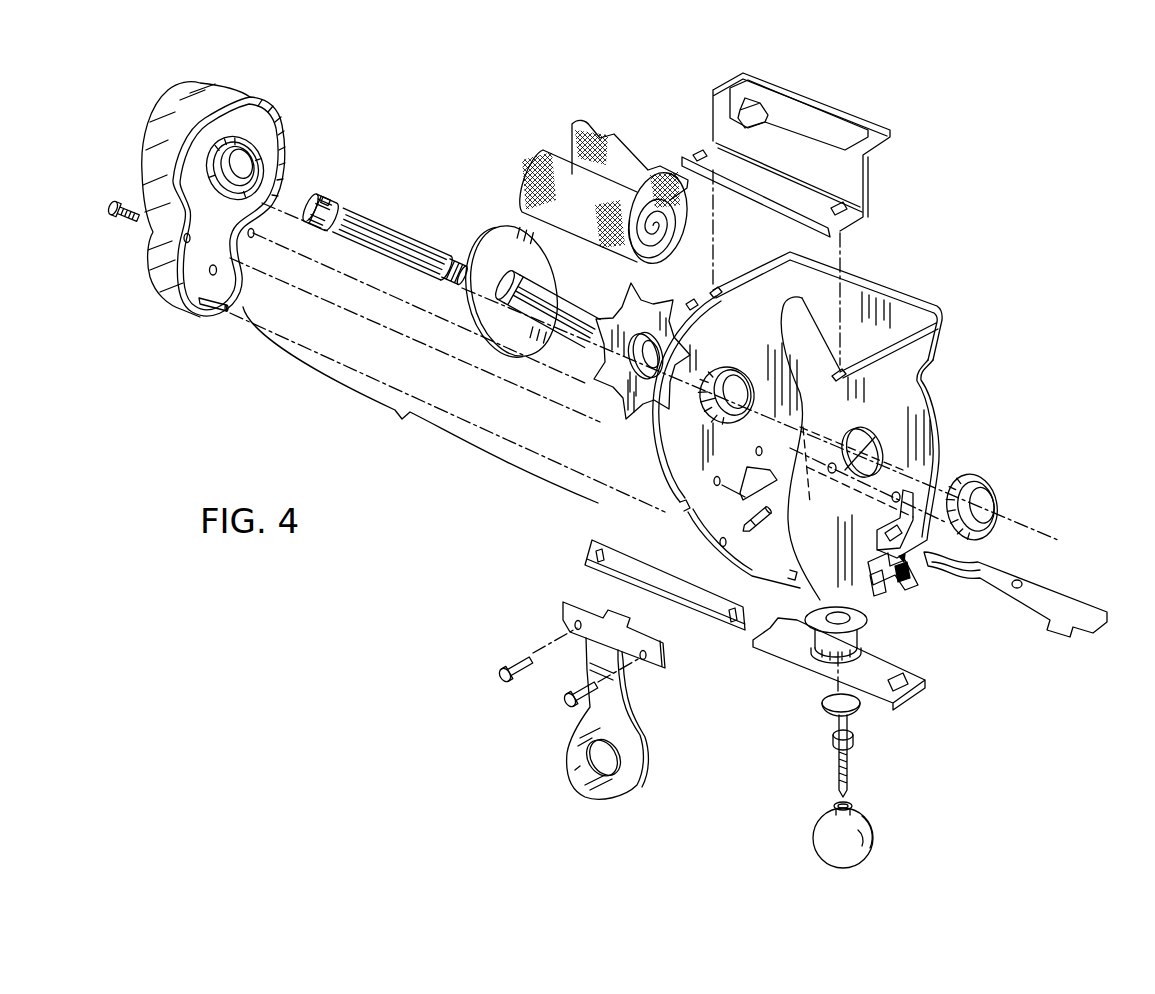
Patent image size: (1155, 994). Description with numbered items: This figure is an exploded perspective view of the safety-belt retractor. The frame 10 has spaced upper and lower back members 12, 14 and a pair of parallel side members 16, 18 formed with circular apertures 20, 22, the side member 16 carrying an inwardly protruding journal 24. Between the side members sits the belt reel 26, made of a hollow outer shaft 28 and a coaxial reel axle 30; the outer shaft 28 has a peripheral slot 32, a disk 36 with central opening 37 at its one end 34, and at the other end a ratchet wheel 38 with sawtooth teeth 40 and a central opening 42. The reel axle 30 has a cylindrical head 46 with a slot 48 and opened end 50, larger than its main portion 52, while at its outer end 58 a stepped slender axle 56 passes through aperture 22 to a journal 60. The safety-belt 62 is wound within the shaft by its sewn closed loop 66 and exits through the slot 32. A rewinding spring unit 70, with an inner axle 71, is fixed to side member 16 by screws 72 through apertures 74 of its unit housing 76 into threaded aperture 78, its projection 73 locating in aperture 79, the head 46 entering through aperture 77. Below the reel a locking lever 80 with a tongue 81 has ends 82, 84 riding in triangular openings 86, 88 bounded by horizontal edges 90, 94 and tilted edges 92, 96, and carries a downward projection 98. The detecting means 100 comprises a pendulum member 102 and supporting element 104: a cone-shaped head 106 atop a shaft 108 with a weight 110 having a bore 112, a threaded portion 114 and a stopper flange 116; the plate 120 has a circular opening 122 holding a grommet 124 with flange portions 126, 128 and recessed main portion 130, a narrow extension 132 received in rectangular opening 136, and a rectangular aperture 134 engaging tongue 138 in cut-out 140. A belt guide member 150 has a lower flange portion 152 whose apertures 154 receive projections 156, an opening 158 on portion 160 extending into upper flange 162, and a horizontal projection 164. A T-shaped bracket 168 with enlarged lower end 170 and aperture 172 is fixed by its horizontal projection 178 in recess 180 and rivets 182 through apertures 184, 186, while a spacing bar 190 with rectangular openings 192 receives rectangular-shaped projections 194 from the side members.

The frame 10 is at (791, 430).
The upper back member 12 is at (826, 314).
The lower back member 14 is at (913, 480).
The side member 16 is at (713, 449).
The side member 18 is at (895, 489).
The circular aperture 20 is at (719, 384).
The circular aperture 22 is at (870, 443).
The journal 24 is at (717, 388).
The belt reel 26 is at (420, 405).
The hollow outer shaft 28 is at (562, 320).
The reel axle 30 is at (400, 211).
The slot 32 is at (557, 330).
The one end of outer shaft 34 is at (510, 305).
The disk 36 is at (487, 325).
The central opening 37 is at (503, 306).
The ratchet wheel 38 is at (692, 305).
The sawtooth shaped teeth 40 is at (635, 352).
The central opening 42 is at (663, 359).
The cylindrical head 46 is at (320, 212).
The slot 48 is at (326, 201).
The opened end 50 is at (315, 209).
The main portion 52 is at (412, 236).
The stepped slender axle 56 is at (463, 253).
The outer end 58 is at (455, 272).
The journal 60 is at (990, 484).
The safety-belt 62 is at (638, 186).
The closed loop 66 is at (665, 232).
The rewinding spring unit 70 is at (210, 218).
The axle 71 is at (228, 275).
The screws 72 is at (125, 220).
The projection 73 is at (225, 311).
The apertures 74 is at (200, 242).
The unit housing 76 is at (176, 90).
The aperture 77 is at (254, 158).
The threaded aperture 78 is at (756, 450).
The aperture 79 is at (720, 549).
The locking lever 80 is at (1035, 601).
The tongue 81 is at (1060, 643).
The end of lever 82 is at (930, 577).
The end of lever 84 is at (1107, 624).
The triangular shaped opening 86 is at (795, 470).
The triangular shaped opening 88 is at (975, 558).
The horizontal edge 90 is at (793, 500).
The tilted edge 92 is at (890, 582).
The horizontal edge 94 is at (798, 392).
The tilted edge 96 is at (900, 530).
The projection 98 is at (1018, 590).
The means for detecting change of vehicle velocity 100 is at (721, 784).
The pendulum member 102 is at (872, 771).
The supporting element 104 is at (841, 659).
The cone-shaped head 106 is at (827, 703).
The shaft 108 is at (833, 730).
The weight 110 is at (816, 833).
The bore 112 is at (853, 804).
The threaded portion 114 is at (848, 768).
The flange 116 is at (853, 739).
The plate 120 is at (841, 659).
The circular opening 122 is at (813, 660).
The grommet 124 is at (863, 623).
The flange portion 126 is at (753, 646).
The flange portion 128 is at (867, 647).
The recessed main portion 130 is at (860, 692).
The laterally stepped narrow extension 132 is at (790, 622).
The rectangular aperture 134 is at (920, 698).
The rectangular opening 136 is at (757, 522).
The tongue 138 is at (873, 578).
The cut-out 140 is at (893, 568).
The belt guide member 150 is at (791, 159).
The lower flange portion 152 is at (793, 182).
The apertures 154 is at (712, 152).
The projections 156 is at (724, 294).
The opening 158 is at (807, 128).
The portion 160 is at (791, 152).
The upper flange 162 is at (857, 122).
The horizontal projection 164 is at (750, 110).
The T-shaped bracket 168 is at (614, 698).
The enlarged lower end 170 is at (627, 773).
The aperture 172 is at (593, 770).
The horizontal projection 178 is at (614, 634).
The recess 180 is at (838, 470).
The rivets 182 is at (520, 660).
The apertures 184 is at (577, 625).
The apertures 186 is at (903, 493).
The spacing bar 190 is at (637, 590).
The rectangular openings 192 is at (590, 552).
The rectangular-shaped projections 194 is at (672, 509).